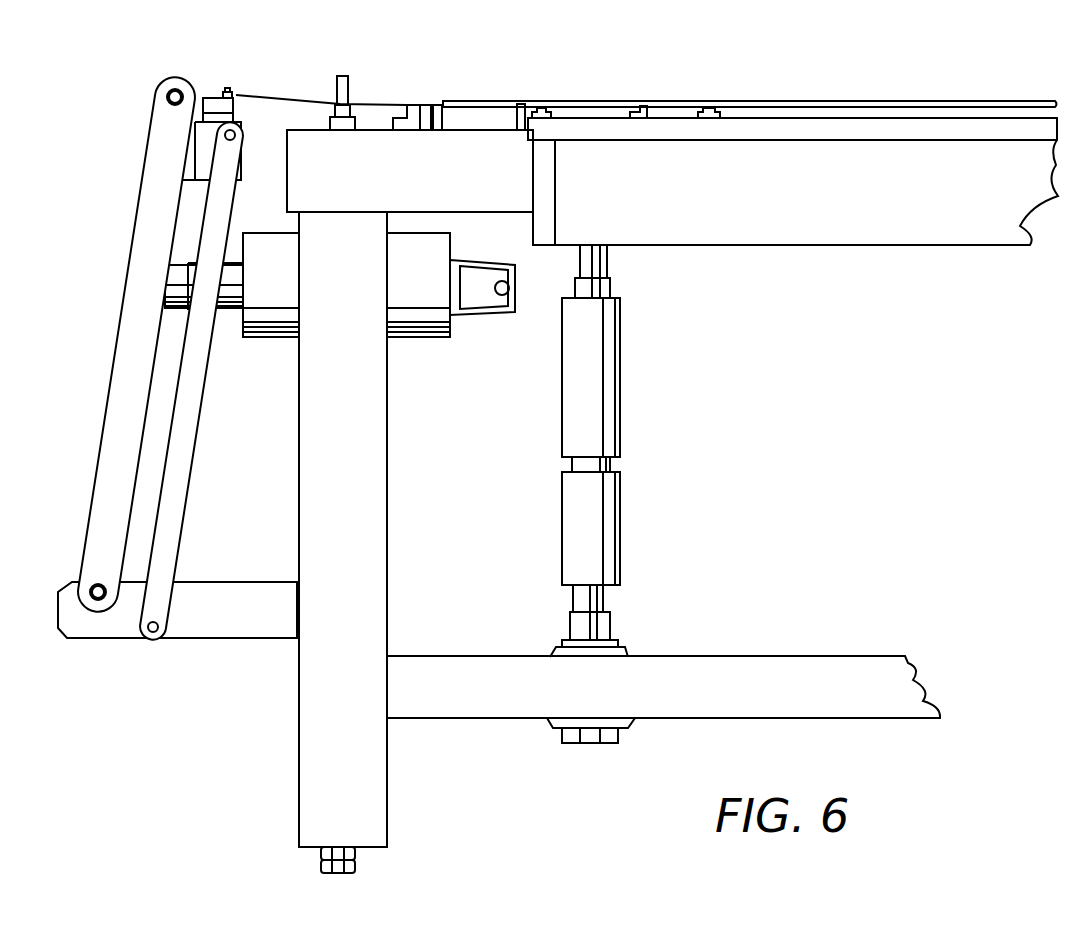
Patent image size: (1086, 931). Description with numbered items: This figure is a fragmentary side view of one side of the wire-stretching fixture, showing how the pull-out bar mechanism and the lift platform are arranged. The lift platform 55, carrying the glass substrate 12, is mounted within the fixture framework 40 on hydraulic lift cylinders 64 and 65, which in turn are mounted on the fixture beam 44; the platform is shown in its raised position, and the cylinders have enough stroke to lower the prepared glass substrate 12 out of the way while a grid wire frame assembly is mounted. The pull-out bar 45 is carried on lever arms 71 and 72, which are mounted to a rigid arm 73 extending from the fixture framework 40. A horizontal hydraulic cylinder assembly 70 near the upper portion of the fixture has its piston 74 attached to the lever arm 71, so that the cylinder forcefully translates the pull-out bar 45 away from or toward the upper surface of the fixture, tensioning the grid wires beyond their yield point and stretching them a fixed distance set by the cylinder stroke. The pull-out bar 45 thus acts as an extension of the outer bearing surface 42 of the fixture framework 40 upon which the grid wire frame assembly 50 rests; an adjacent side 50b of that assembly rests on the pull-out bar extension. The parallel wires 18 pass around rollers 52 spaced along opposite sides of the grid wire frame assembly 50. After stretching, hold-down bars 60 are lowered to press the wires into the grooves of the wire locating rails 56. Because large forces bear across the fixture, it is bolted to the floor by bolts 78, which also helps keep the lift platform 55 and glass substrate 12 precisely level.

The glass substrate 12 is at (543, 101).
The parallel wires 18 is at (278, 98).
The fixture framework 40 is at (393, 458).
The outer bearing surface 42 is at (408, 183).
The fixture beam 44 is at (512, 697).
The pull-out bar 45 is at (198, 138).
The grid wire frame assembly 50 is at (216, 84).
The adjacent side of grid wire frame assembly 50b is at (232, 116).
The rollers 52 is at (233, 88).
The lift platform 55 is at (766, 204).
The wire locating rails 56 is at (414, 104).
The hold-down bars 60 is at (344, 75).
The hydraulic lift cylinder 64 is at (622, 433).
The hydraulic lift cylinder 65 is at (622, 526).
The horizontal hydraulic cylinder assembly 70 is at (266, 338).
The lever arm 71 is at (125, 370).
The lever arm 72 is at (185, 463).
The rigid arm 73 is at (204, 640).
The piston 74 is at (168, 290).
The bolts 78 is at (356, 868).